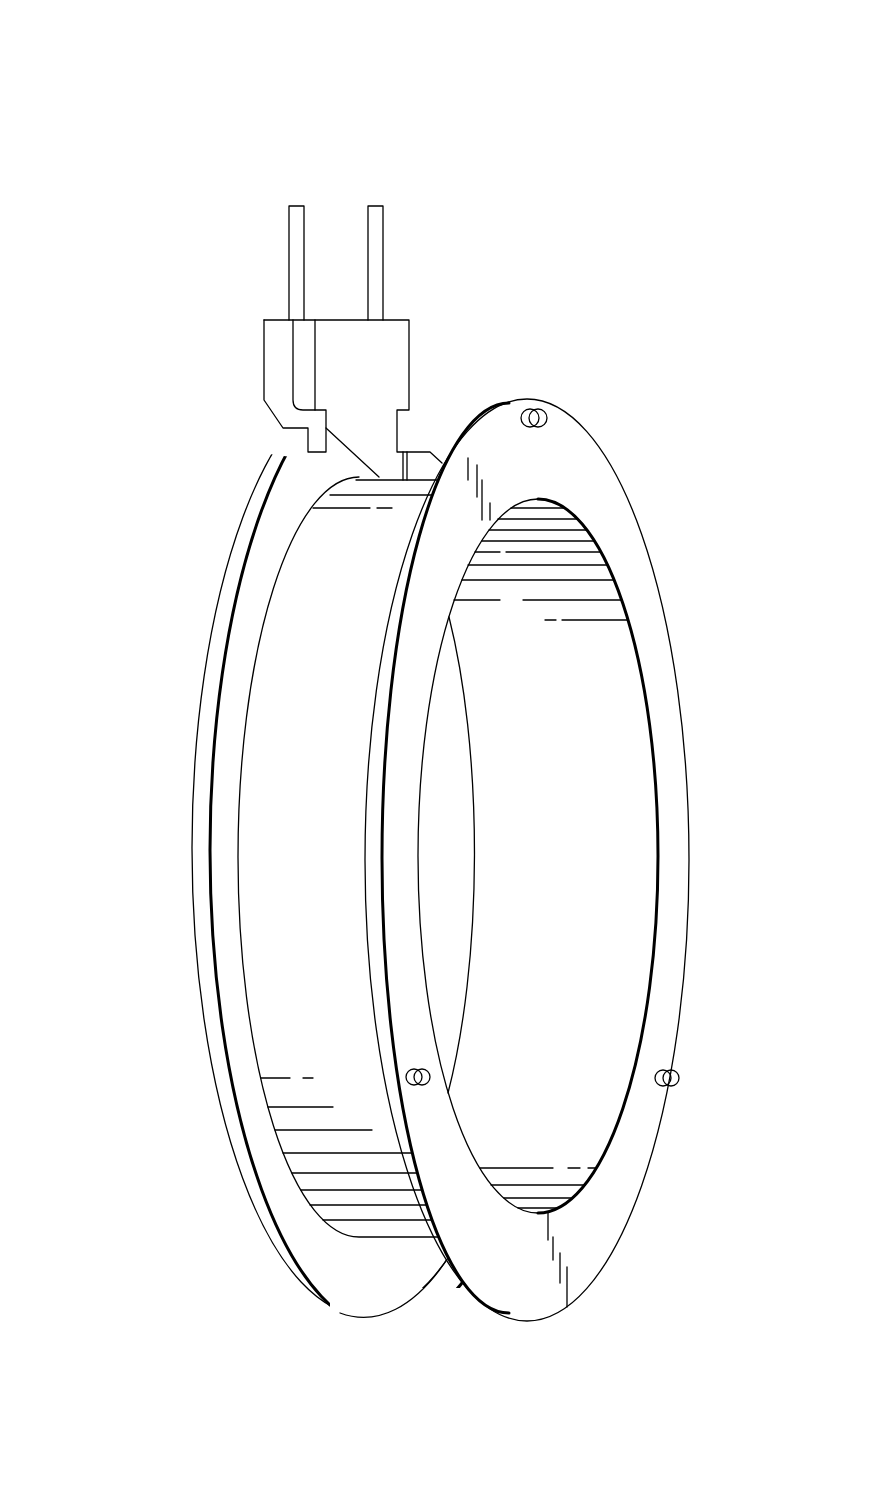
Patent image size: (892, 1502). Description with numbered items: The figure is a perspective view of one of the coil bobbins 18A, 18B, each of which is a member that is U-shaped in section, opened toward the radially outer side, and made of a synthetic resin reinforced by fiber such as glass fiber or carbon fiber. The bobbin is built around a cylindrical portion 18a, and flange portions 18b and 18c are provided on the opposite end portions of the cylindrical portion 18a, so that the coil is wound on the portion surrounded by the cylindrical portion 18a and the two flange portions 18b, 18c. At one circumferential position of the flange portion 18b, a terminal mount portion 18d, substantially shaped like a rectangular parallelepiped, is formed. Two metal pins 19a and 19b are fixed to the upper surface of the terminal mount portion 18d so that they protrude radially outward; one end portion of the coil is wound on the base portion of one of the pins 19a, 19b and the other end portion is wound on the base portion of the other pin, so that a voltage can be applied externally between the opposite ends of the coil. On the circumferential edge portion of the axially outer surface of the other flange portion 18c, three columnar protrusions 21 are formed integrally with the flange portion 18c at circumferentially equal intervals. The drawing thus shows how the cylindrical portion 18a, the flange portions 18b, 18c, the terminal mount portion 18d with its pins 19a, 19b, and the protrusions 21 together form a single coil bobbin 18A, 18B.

The coil bobbin 18A is at (656, 334).
The coil bobbin 18B is at (434, 674).
The cylindrical portion 18a is at (260, 783).
The flange portion 18b is at (242, 658).
The flange portion 18c is at (628, 511).
The terminal mount portion 18d is at (402, 345).
The metal pin 19a is at (291, 240).
The metal pin 19b is at (383, 239).
The columnar protrusion 21 is at (538, 408).